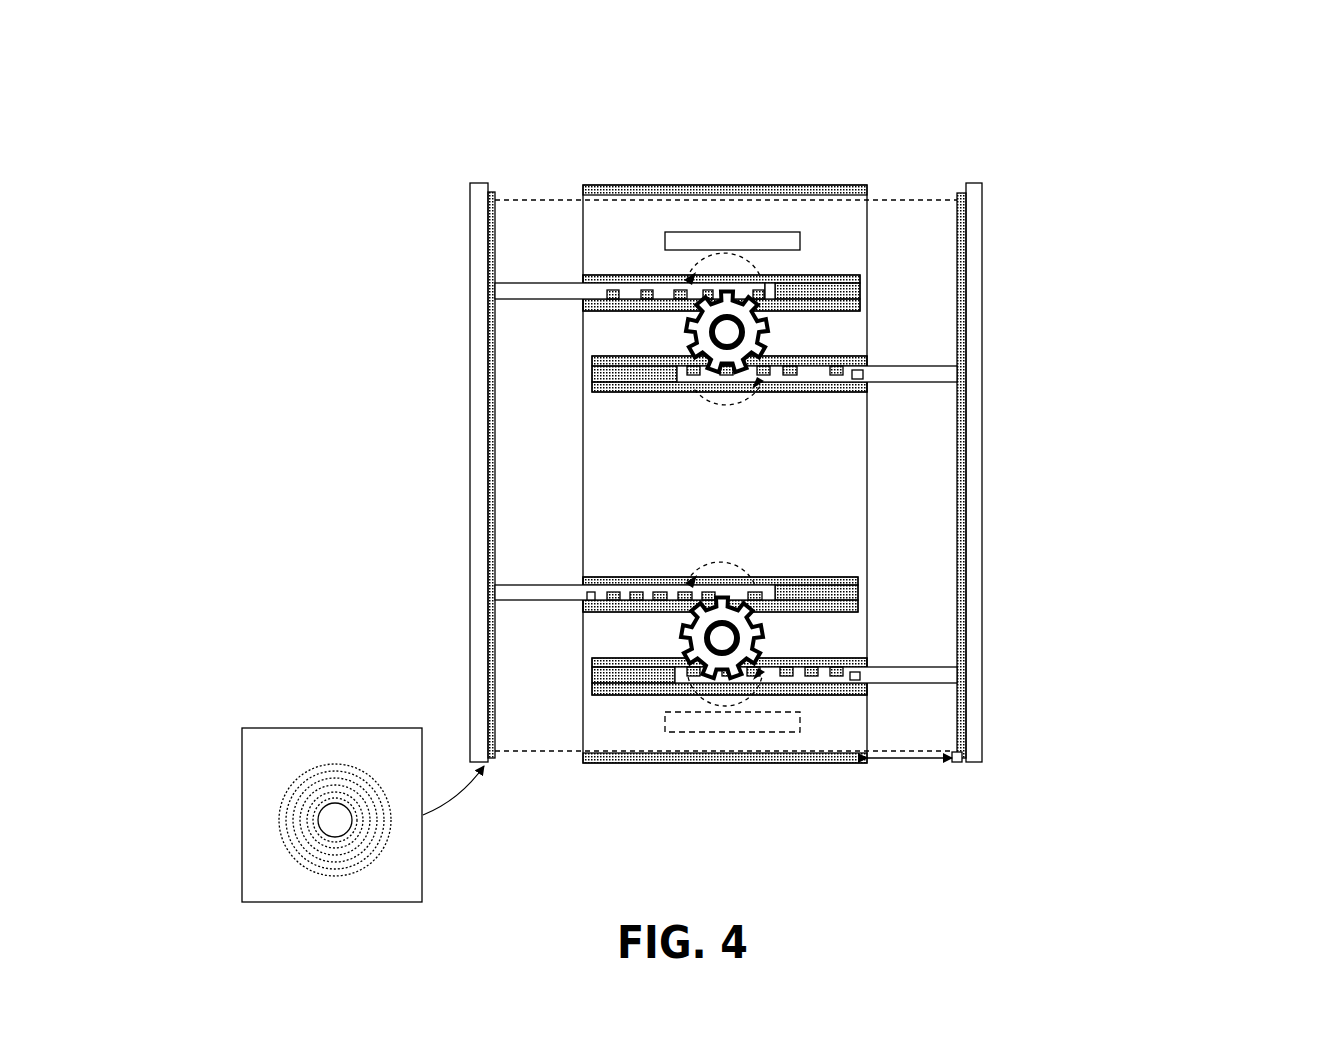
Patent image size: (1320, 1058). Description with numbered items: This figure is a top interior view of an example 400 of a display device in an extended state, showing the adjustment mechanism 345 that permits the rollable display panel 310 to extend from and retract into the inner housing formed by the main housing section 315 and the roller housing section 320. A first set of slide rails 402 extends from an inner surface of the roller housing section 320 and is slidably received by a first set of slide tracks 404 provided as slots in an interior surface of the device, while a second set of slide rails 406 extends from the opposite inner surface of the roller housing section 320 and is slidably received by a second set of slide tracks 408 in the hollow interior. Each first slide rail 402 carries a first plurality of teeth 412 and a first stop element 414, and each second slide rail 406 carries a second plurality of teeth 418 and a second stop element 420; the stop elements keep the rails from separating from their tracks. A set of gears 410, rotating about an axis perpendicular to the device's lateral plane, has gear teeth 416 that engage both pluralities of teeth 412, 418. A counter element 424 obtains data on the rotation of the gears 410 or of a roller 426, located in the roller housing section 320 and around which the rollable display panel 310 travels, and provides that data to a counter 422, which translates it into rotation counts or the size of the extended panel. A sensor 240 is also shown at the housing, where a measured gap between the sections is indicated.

The example 400 is at (190, 66).
The rollable display panel 310 is at (535, 232).
The main housing section 315 is at (660, 845).
The roller housing section 320 is at (1012, 497).
The adjustment mechanism 345 is at (790, 515).
The first set of slide rails 402 is at (528, 302).
The first set of slide tracks 404 is at (840, 278).
The second set of slide rails 406 is at (912, 385).
The second set of slide tracks 408 is at (605, 392).
The set of gears 410 is at (766, 325).
The first plurality of teeth 412 is at (622, 296).
The first stop element 414 is at (592, 590).
The gear teeth 416 is at (688, 322).
The second plurality of teeth 418 is at (803, 377).
The second stop element 420 is at (857, 380).
The counter 422 is at (668, 232).
The counter element 424 is at (768, 286).
The roller 426 is at (363, 826).
The sensor 240 is at (965, 753).